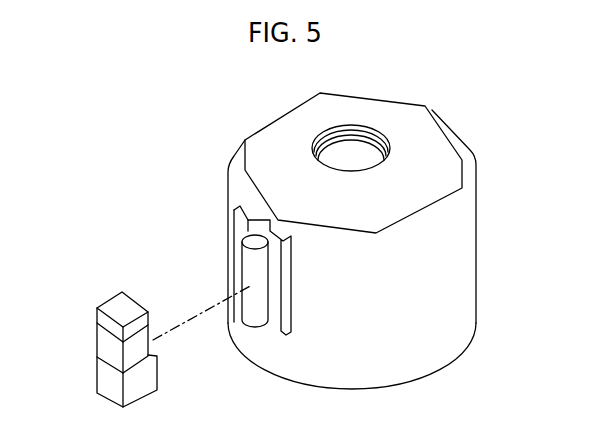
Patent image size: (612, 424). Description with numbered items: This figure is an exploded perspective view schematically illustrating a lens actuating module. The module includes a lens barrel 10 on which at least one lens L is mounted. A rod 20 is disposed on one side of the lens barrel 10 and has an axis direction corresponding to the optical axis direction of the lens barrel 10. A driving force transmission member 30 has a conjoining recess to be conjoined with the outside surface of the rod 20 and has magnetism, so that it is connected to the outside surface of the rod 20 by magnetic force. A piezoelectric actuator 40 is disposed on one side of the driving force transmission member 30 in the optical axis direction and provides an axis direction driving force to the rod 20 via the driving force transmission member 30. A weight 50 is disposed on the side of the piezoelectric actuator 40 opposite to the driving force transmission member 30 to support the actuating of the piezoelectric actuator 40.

The lens barrel 10 is at (470, 270).
The rod 20 is at (250, 270).
The driving force transmission member 30 is at (103, 387).
The piezoelectric actuator 40 is at (102, 348).
The weight 50 is at (115, 303).
The lens L is at (353, 152).